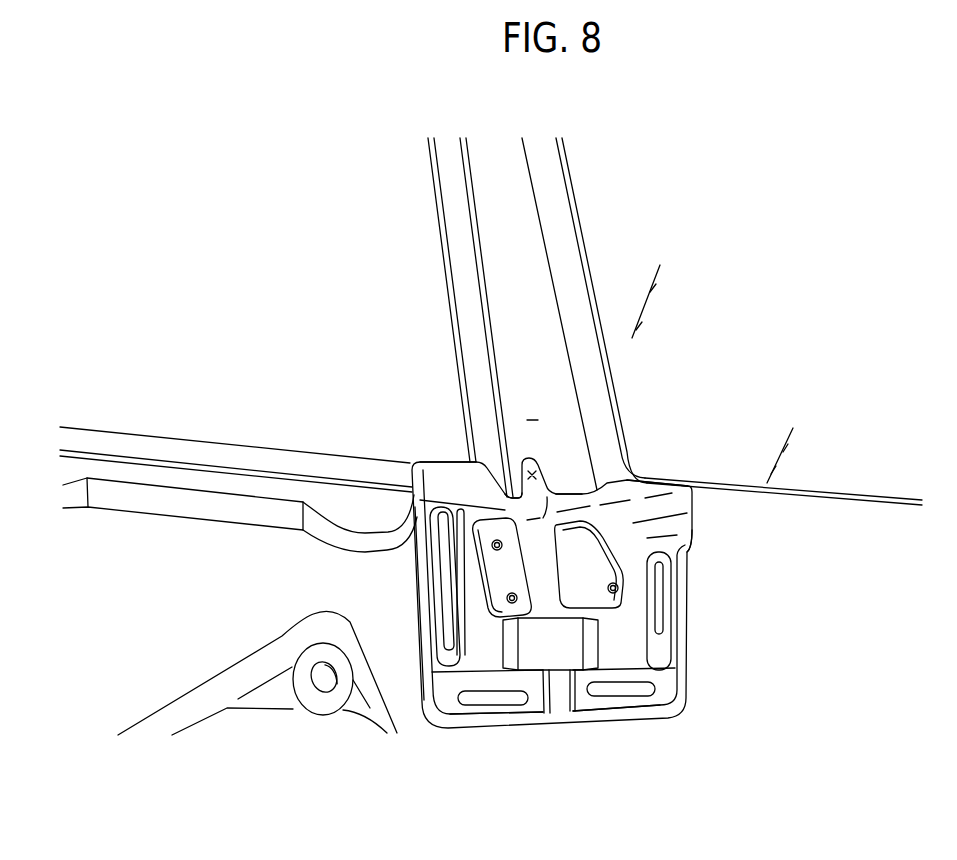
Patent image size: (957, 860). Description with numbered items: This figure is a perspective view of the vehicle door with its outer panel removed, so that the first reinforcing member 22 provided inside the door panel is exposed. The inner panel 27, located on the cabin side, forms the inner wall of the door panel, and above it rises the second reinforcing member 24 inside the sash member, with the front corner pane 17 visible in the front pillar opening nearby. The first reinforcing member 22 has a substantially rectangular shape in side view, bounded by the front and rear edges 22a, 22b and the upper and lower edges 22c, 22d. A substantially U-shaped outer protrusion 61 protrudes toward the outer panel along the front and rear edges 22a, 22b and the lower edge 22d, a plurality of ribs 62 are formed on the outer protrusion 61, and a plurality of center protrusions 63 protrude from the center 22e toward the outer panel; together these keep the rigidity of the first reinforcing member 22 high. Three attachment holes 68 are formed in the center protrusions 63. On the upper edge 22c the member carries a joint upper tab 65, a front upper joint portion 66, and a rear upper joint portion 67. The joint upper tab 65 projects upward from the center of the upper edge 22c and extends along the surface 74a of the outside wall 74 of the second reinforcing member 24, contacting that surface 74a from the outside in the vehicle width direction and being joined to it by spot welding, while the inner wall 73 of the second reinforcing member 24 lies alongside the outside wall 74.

The front corner pane 17 is at (687, 345).
The first reinforcing member 22 is at (414, 634).
The front edge 22a is at (682, 615).
The rear edge 22b is at (427, 650).
The upper edge 22c is at (561, 503).
The lower edge 22d is at (561, 720).
The center 22e is at (548, 572).
The second reinforcing member 24 is at (518, 232).
The inner panel 27 is at (225, 547).
The outer protrusion 61 is at (667, 678).
The ribs 62 is at (443, 572).
The center protrusions 63 is at (500, 577).
The joint upper tab 65 is at (513, 460).
The front upper joint portion 66 is at (647, 484).
The rear upper joint portion 67 is at (437, 477).
The attachment holes 68 is at (497, 548).
The inner wall 73 is at (453, 215).
The outside wall 74 is at (490, 275).
The surface 74a is at (532, 418).